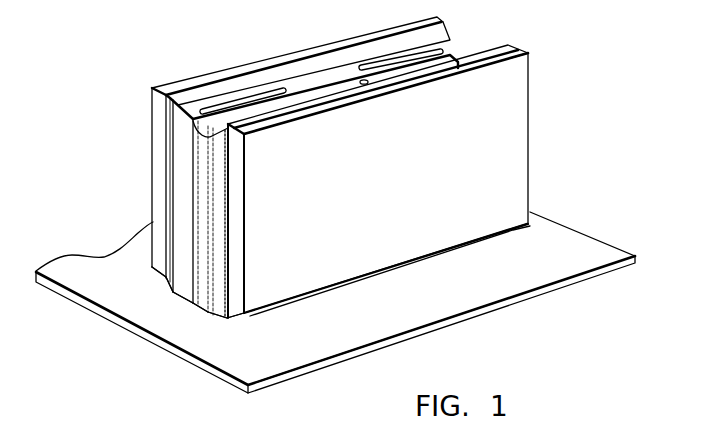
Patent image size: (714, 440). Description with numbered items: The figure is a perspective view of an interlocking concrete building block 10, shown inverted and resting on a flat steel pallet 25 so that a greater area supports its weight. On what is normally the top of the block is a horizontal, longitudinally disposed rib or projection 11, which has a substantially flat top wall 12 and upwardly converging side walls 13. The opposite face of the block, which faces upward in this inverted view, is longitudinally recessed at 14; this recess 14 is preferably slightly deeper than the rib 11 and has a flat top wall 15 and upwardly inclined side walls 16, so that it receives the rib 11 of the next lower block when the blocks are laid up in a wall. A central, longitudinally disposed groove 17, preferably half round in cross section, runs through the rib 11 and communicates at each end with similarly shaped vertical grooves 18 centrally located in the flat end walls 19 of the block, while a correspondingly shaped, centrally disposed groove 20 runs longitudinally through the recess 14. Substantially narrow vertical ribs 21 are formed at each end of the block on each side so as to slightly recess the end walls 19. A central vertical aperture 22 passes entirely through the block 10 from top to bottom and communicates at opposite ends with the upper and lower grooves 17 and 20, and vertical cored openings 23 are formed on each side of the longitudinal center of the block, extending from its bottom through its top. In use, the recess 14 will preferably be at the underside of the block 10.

The building block 10 is at (500, 205).
The rib 11 is at (161, 297).
The top wall of rib 12 is at (177, 290).
The side walls of rib 13 is at (236, 313).
The recess 14 is at (457, 46).
The top wall of recess 15 is at (307, 83).
The side walls of recess 16 is at (182, 96).
The groove 17 is at (198, 305).
The vertical grooves 18 is at (205, 186).
The end walls 19 is at (173, 289).
The groove 20 is at (223, 128).
The vertical ribs 21 is at (155, 118).
The vertical aperture 22 is at (368, 84).
The cored openings 23 is at (392, 57).
The pallet 25 is at (450, 304).